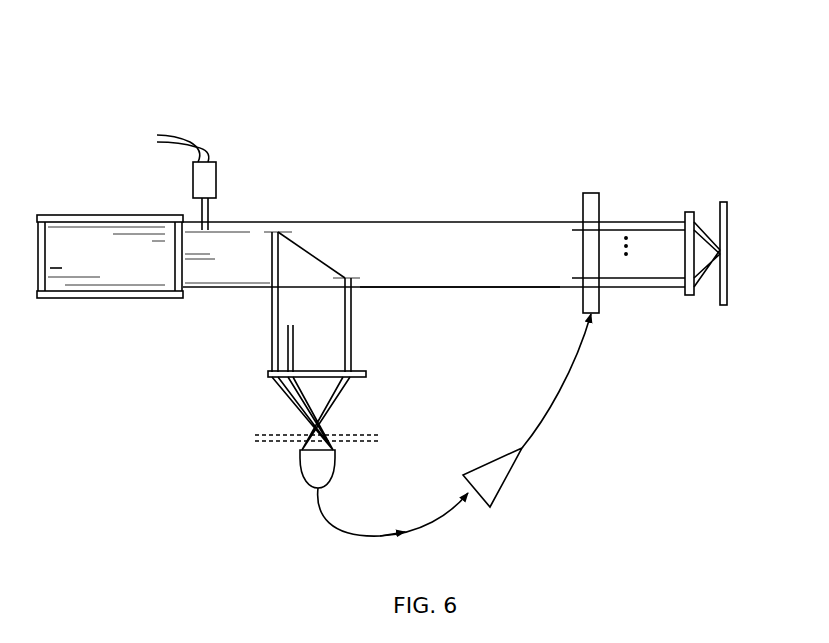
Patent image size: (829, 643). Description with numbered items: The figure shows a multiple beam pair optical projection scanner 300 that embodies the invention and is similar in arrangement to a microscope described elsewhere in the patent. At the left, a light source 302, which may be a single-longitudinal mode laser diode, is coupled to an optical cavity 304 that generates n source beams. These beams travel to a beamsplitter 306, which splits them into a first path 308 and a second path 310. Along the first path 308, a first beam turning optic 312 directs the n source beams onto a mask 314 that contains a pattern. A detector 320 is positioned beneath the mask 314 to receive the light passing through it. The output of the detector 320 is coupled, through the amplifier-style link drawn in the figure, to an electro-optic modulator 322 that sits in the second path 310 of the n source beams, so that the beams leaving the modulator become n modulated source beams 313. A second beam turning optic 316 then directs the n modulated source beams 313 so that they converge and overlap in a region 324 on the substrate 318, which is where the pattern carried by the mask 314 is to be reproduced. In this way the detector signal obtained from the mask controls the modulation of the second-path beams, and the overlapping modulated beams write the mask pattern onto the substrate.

The multiple beam pair optical projection scanner 300 is at (576, 44).
The light source 302 is at (221, 175).
The optical cavity 304 is at (90, 215).
The beamsplitter 306 is at (308, 222).
The first path 308 is at (308, 312).
The second path 310 is at (470, 237).
The first beam turning optic 312 is at (241, 389).
The n modulated source beams 313 is at (641, 270).
The mask 314 is at (380, 437).
The second beam turning optic 316 is at (690, 297).
The substrate 318 is at (727, 202).
The detector 320 is at (270, 476).
The electro-optic modulator 322 is at (594, 193).
The region 324 is at (703, 278).